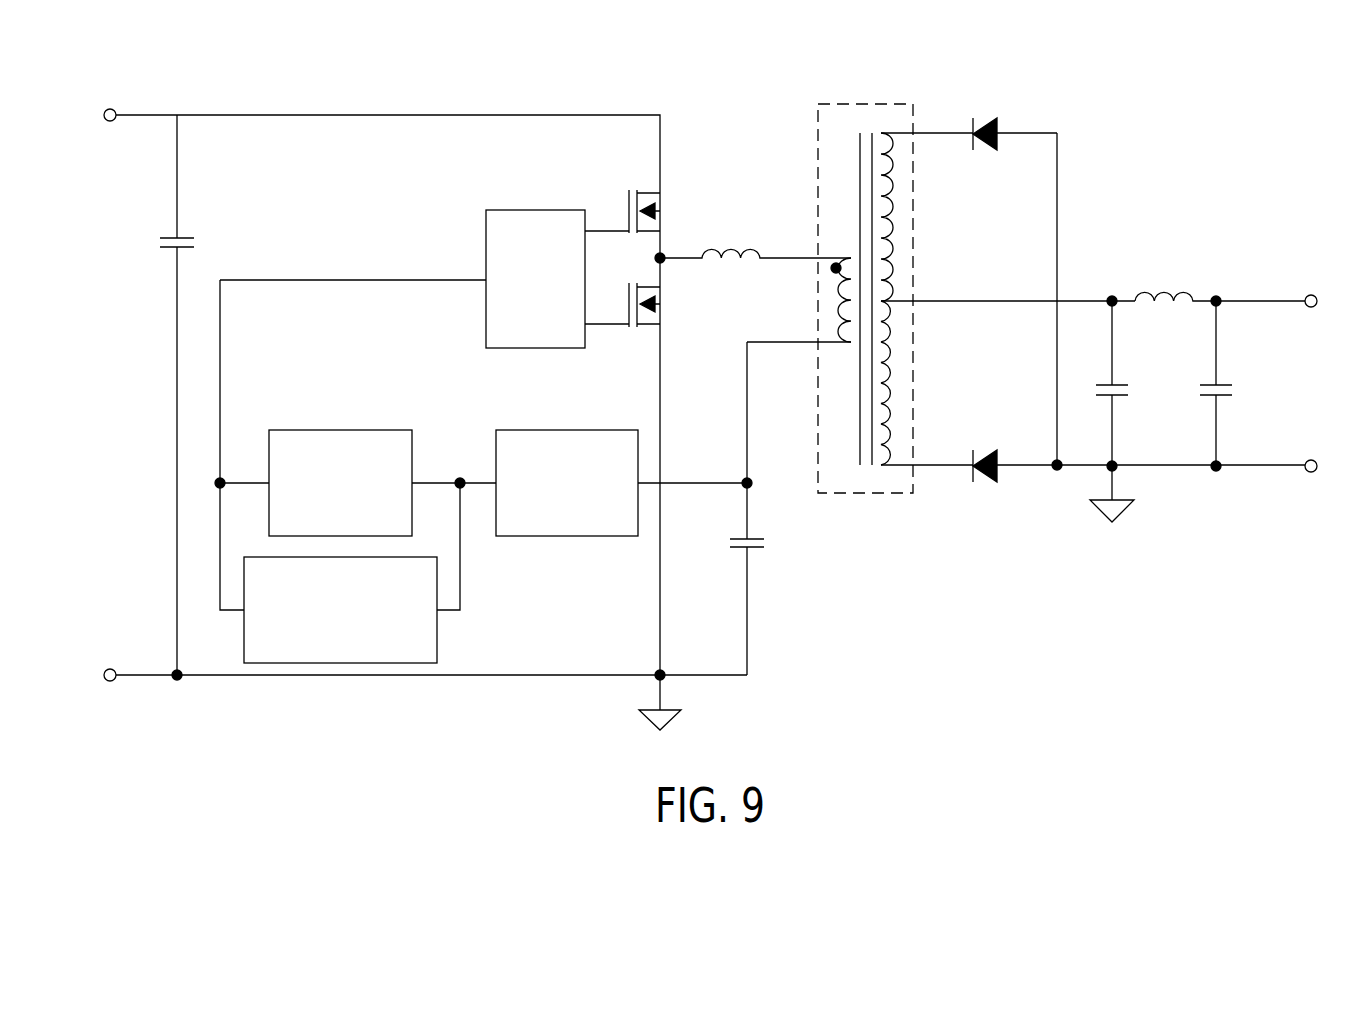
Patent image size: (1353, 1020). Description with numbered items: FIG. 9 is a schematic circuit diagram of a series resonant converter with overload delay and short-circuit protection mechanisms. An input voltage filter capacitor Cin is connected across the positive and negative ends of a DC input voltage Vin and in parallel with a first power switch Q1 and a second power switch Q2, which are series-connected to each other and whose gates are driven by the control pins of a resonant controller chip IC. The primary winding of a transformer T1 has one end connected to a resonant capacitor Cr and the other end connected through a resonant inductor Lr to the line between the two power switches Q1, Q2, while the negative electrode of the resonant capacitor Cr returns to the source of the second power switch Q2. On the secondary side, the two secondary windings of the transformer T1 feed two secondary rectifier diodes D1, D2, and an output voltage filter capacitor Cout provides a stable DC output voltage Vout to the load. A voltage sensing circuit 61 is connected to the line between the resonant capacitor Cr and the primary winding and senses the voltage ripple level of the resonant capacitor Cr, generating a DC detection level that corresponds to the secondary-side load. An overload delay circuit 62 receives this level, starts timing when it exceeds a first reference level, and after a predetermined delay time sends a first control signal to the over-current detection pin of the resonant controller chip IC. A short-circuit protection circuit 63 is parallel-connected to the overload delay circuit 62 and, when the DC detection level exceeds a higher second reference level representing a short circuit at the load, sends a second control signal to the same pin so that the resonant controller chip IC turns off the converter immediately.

The voltage sensing circuit 61 is at (601, 440).
The overload delay circuit 62 is at (369, 440).
The short-circuit protection circuit 63 is at (437, 640).
The resonant controller chip IC is at (517, 222).
The first power switch Q1 is at (661, 211).
The second power switch Q2 is at (661, 305).
The resonant inductor Lr is at (755, 240).
The resonant capacitor Cr is at (760, 508).
The input voltage filter capacitor Cin is at (193, 397).
The transformer T1 is at (850, 283).
The secondary rectifier diode D1 is at (969, 115).
The secondary rectifier diode D2 is at (969, 452).
The output voltage filter capacitor Cout is at (1239, 383).
The DC input voltage Vin is at (110, 121).
The DC output voltage Vout is at (1311, 311).